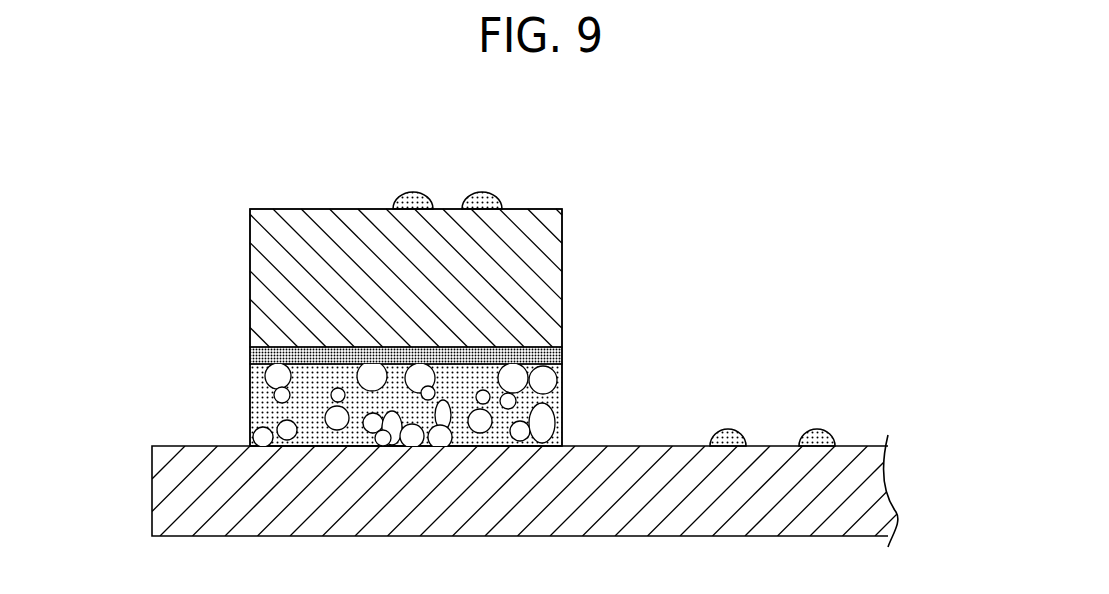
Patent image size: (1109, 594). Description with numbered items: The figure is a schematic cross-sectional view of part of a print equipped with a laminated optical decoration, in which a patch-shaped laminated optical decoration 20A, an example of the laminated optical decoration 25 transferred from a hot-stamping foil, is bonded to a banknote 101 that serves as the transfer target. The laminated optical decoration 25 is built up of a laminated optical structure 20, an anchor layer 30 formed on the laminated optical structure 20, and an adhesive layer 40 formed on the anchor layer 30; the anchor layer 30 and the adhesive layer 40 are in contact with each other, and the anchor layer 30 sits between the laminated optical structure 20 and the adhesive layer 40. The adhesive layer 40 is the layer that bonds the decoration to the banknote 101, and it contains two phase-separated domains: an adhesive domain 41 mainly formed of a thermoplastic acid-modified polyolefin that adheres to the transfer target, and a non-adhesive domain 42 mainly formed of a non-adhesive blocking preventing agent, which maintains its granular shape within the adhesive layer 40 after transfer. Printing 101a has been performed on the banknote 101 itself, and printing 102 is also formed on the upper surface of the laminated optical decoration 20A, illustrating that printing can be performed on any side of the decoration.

The laminated optical structure 20 is at (250, 278).
The laminated body 20A is at (526, 183).
The laminated optical decoration 25 is at (172, 205).
The anchor layer 30 is at (250, 357).
The adhesive layer 40 is at (250, 425).
The adhesive domain 41 is at (536, 381).
The non-adhesive domain 42 is at (540, 436).
The banknote 101 is at (152, 488).
The printing 101a is at (728, 431).
The printing 102 is at (413, 200).